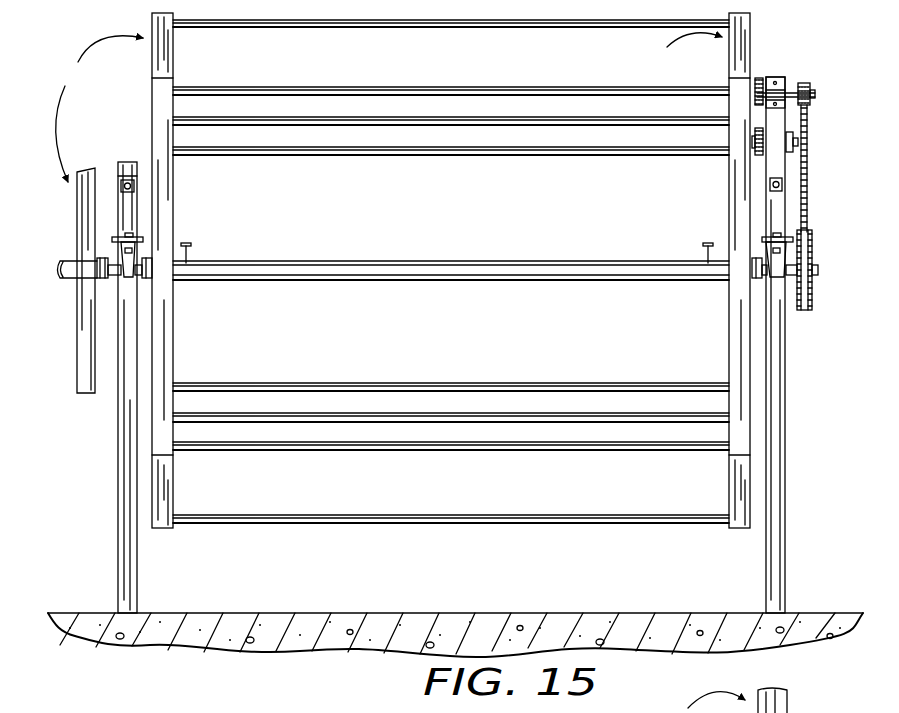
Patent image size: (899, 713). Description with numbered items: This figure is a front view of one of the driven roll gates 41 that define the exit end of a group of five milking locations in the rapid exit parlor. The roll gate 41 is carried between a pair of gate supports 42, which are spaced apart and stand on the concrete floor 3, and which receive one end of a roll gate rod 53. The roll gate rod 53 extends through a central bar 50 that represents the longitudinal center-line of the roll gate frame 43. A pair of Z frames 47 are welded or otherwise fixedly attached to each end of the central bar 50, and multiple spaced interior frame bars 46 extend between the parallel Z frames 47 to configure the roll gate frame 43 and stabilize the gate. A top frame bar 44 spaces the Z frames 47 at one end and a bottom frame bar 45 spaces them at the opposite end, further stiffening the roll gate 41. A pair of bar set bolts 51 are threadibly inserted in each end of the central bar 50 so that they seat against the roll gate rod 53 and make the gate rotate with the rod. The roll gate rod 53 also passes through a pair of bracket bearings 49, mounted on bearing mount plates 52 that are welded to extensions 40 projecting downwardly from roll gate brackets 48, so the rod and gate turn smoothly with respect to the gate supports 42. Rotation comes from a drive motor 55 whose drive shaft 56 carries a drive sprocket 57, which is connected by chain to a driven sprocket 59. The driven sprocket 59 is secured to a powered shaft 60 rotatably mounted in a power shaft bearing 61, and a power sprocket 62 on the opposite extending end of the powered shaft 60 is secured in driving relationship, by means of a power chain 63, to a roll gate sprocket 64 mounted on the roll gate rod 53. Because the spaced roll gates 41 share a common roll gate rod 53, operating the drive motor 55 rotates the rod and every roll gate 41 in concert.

The concrete floor 3 is at (440, 613).
The extension 40 is at (138, 211).
The roll gate 41 is at (99, 109).
The gate support 42 is at (125, 508).
The roll gate frame 43 is at (680, 49).
The top frame bar 44 is at (440, 30).
The bottom frame bar 45 is at (440, 514).
The interior frame bar 46 is at (501, 95).
The Z frame 47 is at (168, 62).
The roll gate bracket 48 is at (128, 162).
The bracket bearing 49 is at (130, 278).
The central bar 50 is at (498, 266).
The bar set bolt 51 is at (190, 246).
The bearing mount plate 52 is at (142, 238).
The roll gate rod 53 is at (143, 256).
The drive motor 55 is at (799, 158).
The drive shaft 56 is at (797, 140).
The drive sprocket 57 is at (757, 80).
The driven sprocket 59 is at (757, 150).
The powered shaft 60 is at (791, 93).
The power shaft bearing 61 is at (785, 80).
The power sprocket 62 is at (812, 90).
The power chain 63 is at (808, 199).
The roll gate sprocket 64 is at (803, 311).